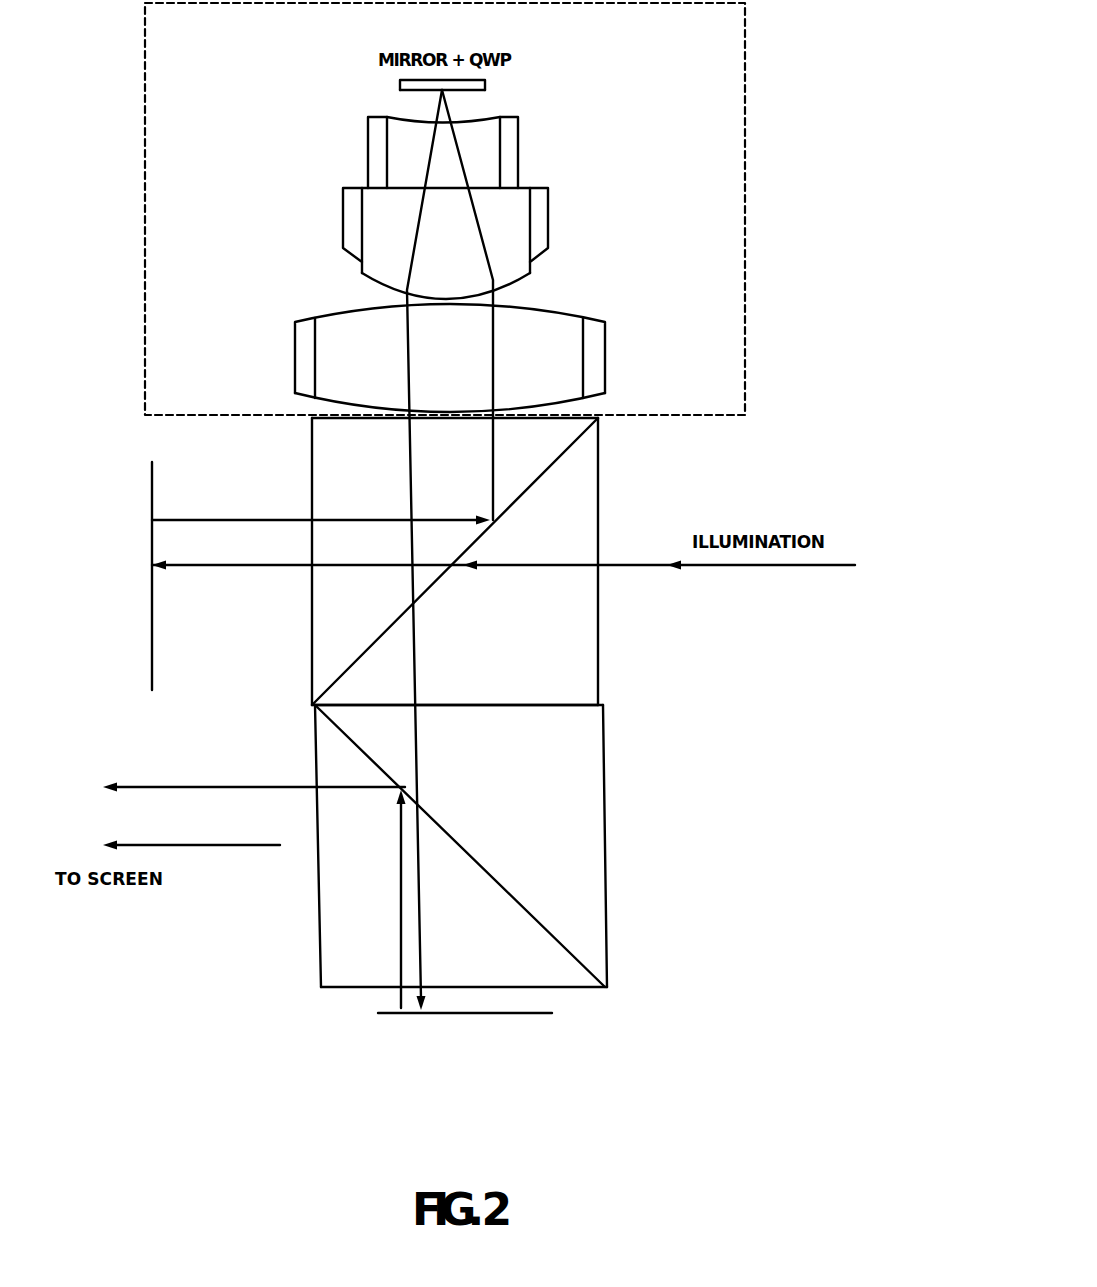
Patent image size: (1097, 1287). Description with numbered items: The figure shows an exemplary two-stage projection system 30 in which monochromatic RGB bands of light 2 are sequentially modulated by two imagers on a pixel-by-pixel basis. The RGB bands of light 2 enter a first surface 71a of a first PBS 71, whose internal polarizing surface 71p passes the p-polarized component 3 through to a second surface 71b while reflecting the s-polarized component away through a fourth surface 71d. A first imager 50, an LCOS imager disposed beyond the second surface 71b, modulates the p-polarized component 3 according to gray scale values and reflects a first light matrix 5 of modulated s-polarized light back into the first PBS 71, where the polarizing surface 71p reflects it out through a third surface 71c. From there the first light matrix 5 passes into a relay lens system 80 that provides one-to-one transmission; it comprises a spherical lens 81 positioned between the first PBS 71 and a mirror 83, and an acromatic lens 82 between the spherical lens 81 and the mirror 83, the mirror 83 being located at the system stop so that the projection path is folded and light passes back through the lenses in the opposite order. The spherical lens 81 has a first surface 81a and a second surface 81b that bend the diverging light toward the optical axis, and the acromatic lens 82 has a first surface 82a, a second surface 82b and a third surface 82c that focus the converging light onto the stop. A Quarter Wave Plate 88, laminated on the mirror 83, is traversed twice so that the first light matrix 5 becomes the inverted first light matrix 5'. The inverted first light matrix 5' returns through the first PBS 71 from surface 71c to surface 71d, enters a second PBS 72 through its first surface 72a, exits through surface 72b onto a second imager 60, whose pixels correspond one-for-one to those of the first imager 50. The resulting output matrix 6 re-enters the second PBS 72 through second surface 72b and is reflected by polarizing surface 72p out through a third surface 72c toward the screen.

The RGB bands of light 2 is at (760, 566).
The p-polarized component 3 is at (270, 567).
The first light matrix 5 is at (322, 307).
The inverted first light matrix 5' is at (462, 550).
The output matrix 6 is at (218, 787).
The projection system 30 is at (801, 34).
The first imager 50 is at (150, 642).
The second imager 60 is at (393, 1015).
The first PBS 71 is at (600, 612).
The first surface 71a is at (598, 468).
The second surface 71b is at (312, 668).
The third surface 71c is at (332, 420).
The fourth surface 71d is at (540, 705).
The polarizing surface 71p is at (385, 628).
The second PBS 72 is at (606, 822).
The first surface 72a is at (598, 707).
The second surface 72b is at (575, 990).
The third surface 72c is at (320, 920).
The polarizing surface 72p is at (557, 940).
The relay lens system 80 is at (213, 47).
The spherical lens 81 is at (270, 357).
The first surface 81a is at (330, 402).
The second surface 81b is at (320, 318).
The acromatic lens 82 is at (292, 188).
The first surface 82a is at (355, 268).
The second surface 82b is at (400, 185).
The third surface 82c is at (398, 118).
The mirror 83 is at (487, 85).
The Quarter Wave Plate 88 is at (487, 88).